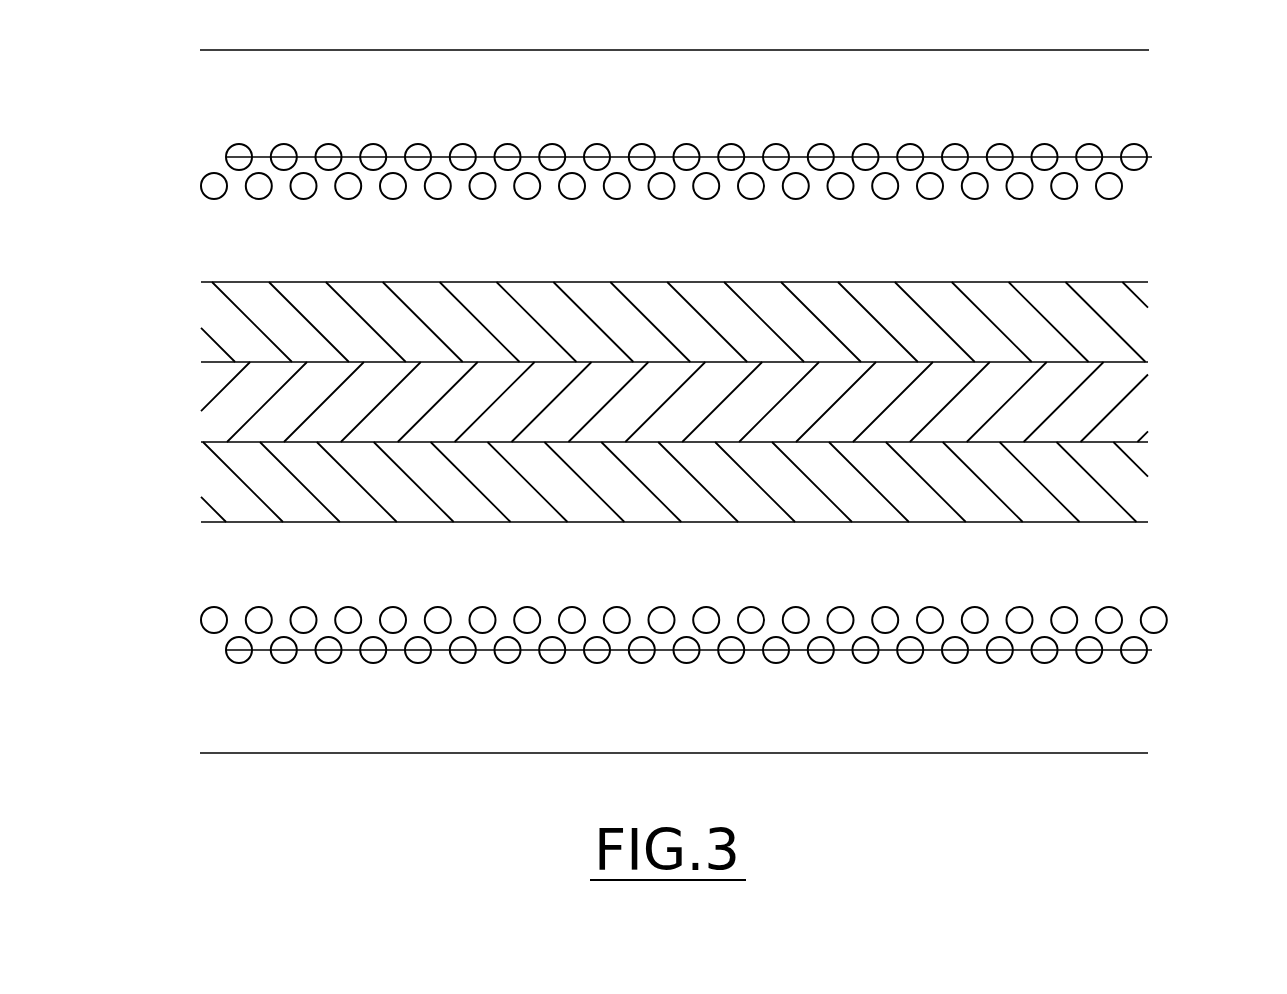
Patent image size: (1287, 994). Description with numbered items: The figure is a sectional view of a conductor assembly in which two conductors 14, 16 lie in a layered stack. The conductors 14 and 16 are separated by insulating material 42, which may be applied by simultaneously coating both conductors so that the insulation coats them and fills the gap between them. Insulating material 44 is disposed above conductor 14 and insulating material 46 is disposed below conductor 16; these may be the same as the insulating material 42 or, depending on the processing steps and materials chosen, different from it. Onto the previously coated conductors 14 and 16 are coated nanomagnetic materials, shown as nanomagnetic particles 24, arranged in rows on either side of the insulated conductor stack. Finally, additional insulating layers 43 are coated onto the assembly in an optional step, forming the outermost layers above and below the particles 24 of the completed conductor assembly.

The conductor 14 is at (1132, 326).
The conductor 16 is at (1127, 475).
The nanomagnetic particles 24 is at (232, 146).
The insulating material 42 is at (213, 395).
The additional insulating layers 43 is at (1105, 87).
The insulating material 44 is at (230, 562).
The insulating material 46 is at (232, 242).